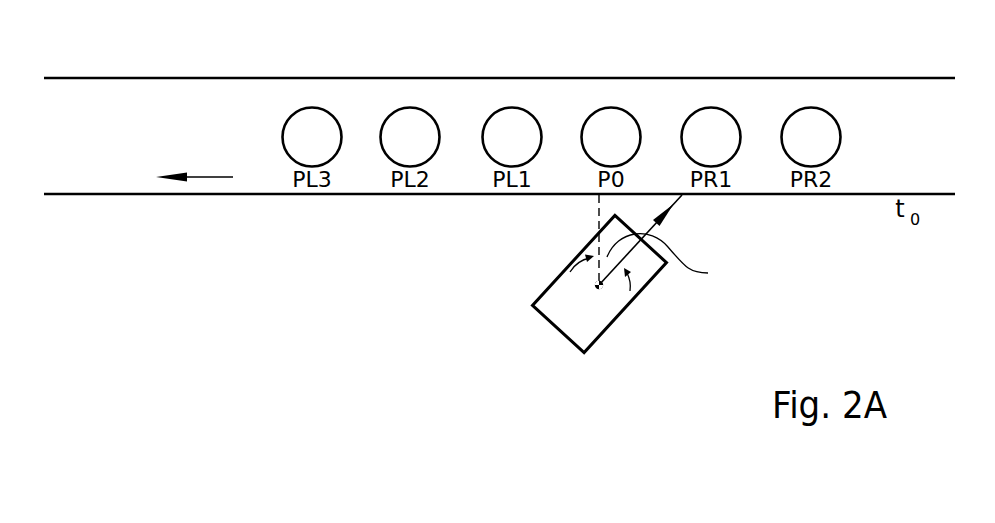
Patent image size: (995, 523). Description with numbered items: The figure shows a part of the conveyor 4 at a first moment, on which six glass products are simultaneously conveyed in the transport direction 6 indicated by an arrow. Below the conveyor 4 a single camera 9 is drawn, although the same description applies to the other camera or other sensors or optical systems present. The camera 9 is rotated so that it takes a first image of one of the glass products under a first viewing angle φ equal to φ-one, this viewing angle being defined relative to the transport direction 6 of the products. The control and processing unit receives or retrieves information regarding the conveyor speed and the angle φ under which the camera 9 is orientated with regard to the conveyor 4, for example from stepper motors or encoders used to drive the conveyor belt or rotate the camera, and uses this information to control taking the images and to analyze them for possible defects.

The conveyor 4 is at (411, 77).
The transport direction 6 is at (210, 178).
The camera 9 is at (632, 303).